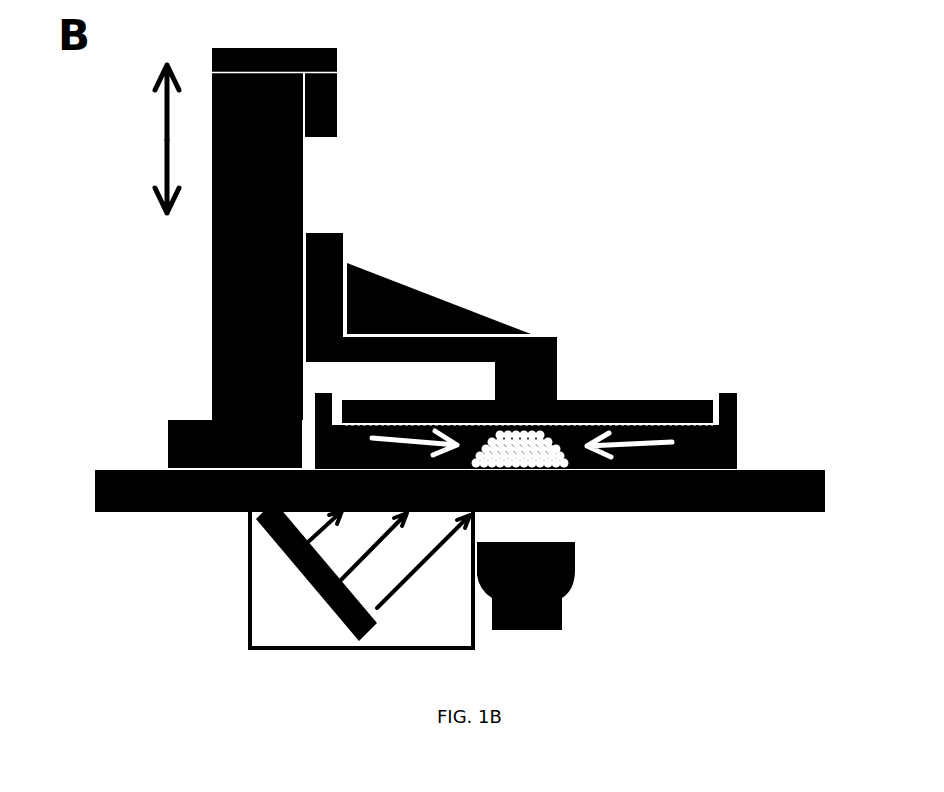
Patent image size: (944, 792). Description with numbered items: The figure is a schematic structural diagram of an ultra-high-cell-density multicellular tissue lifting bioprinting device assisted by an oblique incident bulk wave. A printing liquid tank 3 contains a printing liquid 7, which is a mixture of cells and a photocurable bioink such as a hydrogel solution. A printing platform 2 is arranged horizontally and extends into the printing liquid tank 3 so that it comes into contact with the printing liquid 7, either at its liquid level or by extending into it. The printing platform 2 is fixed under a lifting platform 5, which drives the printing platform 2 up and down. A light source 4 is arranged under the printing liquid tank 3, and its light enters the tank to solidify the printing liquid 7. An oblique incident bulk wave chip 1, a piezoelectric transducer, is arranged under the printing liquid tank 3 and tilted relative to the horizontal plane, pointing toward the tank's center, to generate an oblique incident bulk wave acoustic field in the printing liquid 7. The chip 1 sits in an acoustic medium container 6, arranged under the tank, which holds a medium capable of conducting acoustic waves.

The oblique incident bulk wave chip 1 is at (277, 562).
The printing platform 2 is at (437, 402).
The printing liquid tank 3 is at (700, 458).
The light source 4 is at (563, 593).
The lifting platform 5 is at (347, 258).
The acoustic medium container 6 is at (248, 627).
The printing liquid 7 is at (553, 435).